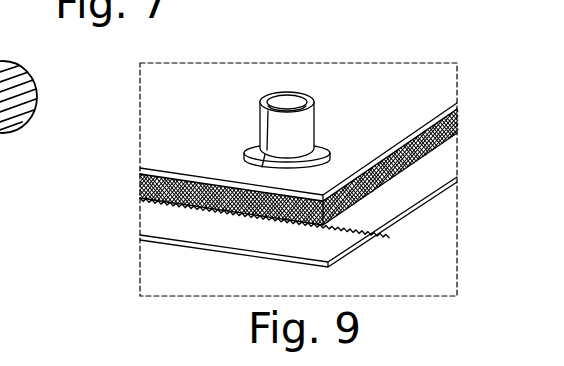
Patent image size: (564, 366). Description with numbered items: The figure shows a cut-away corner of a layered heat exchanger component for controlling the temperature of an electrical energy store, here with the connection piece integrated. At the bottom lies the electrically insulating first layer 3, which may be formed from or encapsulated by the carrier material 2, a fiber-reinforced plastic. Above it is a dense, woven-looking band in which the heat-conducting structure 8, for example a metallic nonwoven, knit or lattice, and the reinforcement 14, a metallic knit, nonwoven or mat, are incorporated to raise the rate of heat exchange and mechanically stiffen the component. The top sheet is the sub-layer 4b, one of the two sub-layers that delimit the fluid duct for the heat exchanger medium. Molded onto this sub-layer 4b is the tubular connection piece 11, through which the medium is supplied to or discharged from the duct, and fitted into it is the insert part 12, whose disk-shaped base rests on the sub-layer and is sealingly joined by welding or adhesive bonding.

The carrier material 2 is at (168, 235).
The first layer 3 is at (241, 222).
The sub-layer 4b is at (423, 90).
The heat-conducting structure 8 is at (237, 173).
The reinforcement 14 is at (140, 190).
The connection piece 11 is at (282, 88).
The insert part 12 is at (287, 131).